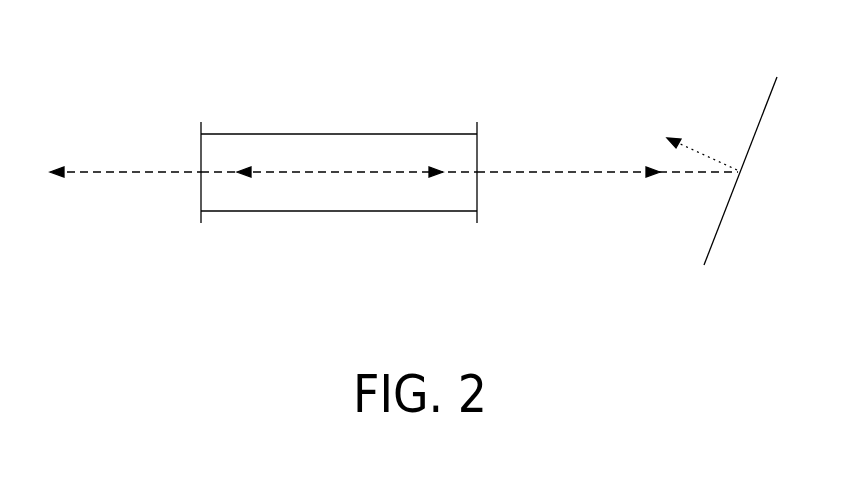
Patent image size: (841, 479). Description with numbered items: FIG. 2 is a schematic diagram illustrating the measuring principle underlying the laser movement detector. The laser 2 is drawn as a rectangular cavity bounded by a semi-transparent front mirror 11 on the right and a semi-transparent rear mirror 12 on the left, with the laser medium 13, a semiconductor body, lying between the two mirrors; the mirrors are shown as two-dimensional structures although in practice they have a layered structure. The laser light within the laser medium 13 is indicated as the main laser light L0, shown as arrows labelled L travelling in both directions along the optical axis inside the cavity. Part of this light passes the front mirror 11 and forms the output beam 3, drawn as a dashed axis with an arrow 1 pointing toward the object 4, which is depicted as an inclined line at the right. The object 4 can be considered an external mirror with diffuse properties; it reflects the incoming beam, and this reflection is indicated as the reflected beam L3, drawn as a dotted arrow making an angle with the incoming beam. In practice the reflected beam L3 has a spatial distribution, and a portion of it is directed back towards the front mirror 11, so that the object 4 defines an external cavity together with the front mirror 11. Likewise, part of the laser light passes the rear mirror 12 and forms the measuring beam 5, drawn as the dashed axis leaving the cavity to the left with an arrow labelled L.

The light beam direction toward mirror 1 is at (643, 161).
The laser 2 is at (339, 159).
The output beam 3 is at (553, 176).
The object 4 is at (768, 92).
The measuring beam 5 is at (138, 176).
The front mirror 11 is at (477, 133).
The rear mirror 12 is at (201, 134).
The laser medium 13 is at (316, 134).
The light path length L is at (265, 159).
The main laser light L0 is at (341, 176).
The reflected beam L3 is at (702, 140).